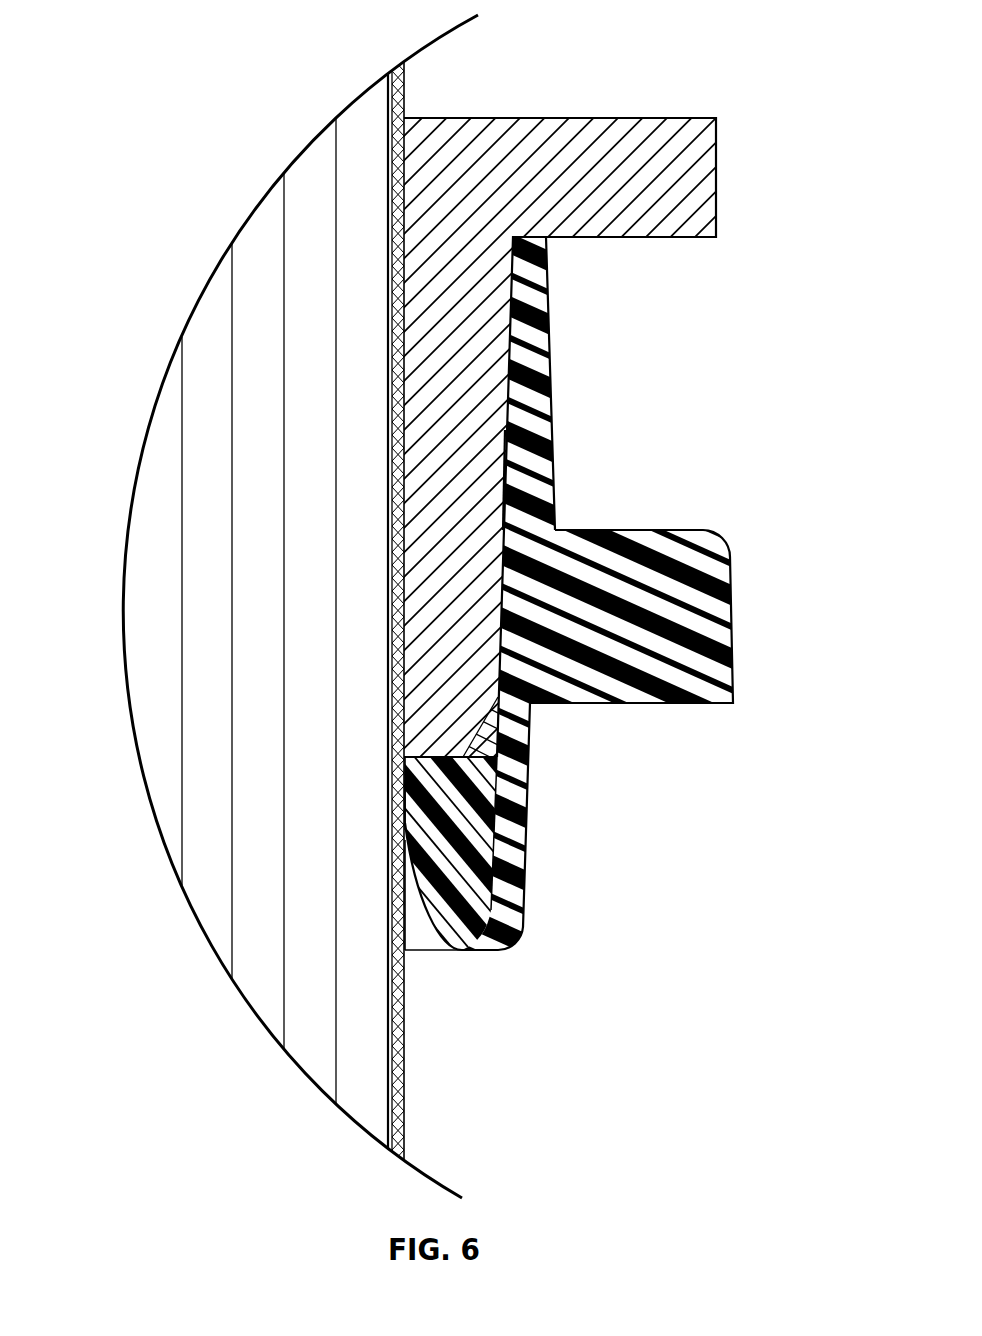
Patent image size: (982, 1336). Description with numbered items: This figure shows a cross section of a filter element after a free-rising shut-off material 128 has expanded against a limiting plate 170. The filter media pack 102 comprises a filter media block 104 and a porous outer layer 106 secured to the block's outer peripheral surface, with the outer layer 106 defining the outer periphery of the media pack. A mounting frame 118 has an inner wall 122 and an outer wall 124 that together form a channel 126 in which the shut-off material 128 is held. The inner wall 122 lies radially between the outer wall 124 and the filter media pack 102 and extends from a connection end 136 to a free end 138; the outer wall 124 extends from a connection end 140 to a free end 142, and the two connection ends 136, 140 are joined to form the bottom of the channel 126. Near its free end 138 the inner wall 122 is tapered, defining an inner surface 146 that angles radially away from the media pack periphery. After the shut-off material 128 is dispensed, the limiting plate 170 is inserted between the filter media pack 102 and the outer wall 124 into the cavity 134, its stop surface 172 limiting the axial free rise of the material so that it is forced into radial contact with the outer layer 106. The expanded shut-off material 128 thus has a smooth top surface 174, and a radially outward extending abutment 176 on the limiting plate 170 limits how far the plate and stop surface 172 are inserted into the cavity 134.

The filter media pack 102 is at (491, 627).
The filter media block 104 is at (313, 160).
The porous outer layer 106 is at (407, 73).
The mounting frame 118 is at (630, 538).
The inner wall 122 is at (415, 872).
The outer wall 124 is at (503, 832).
The channel 126 is at (466, 820).
The shut-off material 128 is at (473, 888).
The cavity 134 is at (474, 514).
The connection end of inner wall 136 is at (450, 940).
The free end of inner wall 138 is at (406, 822).
The connection end of outer wall 140 is at (500, 925).
The free end of outer wall 142 is at (545, 238).
The inner surface 146 is at (404, 855).
The limiting plate 170 is at (675, 178).
The stop surface 172 is at (527, 748).
The top surface 174 is at (475, 780).
The abutment 176 is at (687, 227).